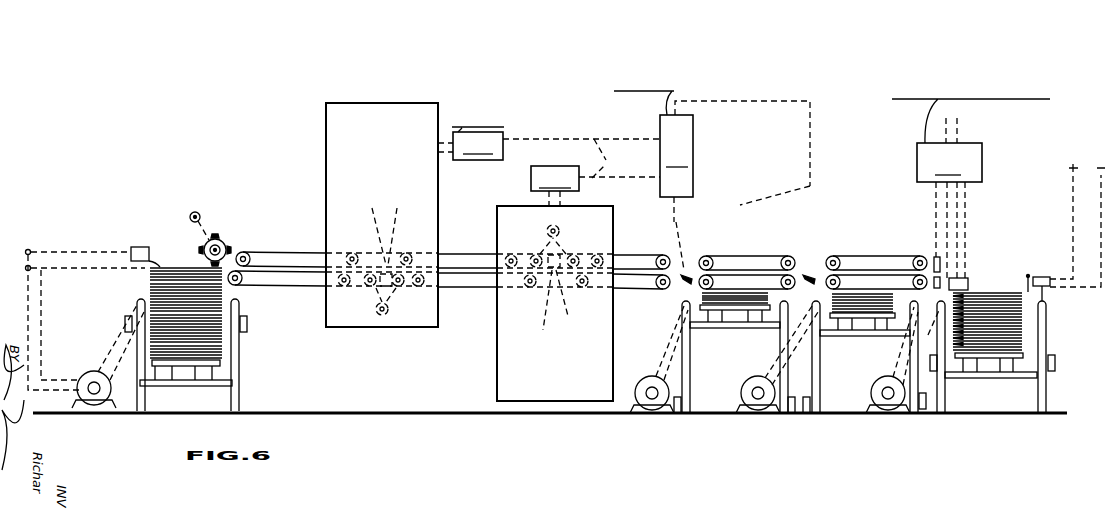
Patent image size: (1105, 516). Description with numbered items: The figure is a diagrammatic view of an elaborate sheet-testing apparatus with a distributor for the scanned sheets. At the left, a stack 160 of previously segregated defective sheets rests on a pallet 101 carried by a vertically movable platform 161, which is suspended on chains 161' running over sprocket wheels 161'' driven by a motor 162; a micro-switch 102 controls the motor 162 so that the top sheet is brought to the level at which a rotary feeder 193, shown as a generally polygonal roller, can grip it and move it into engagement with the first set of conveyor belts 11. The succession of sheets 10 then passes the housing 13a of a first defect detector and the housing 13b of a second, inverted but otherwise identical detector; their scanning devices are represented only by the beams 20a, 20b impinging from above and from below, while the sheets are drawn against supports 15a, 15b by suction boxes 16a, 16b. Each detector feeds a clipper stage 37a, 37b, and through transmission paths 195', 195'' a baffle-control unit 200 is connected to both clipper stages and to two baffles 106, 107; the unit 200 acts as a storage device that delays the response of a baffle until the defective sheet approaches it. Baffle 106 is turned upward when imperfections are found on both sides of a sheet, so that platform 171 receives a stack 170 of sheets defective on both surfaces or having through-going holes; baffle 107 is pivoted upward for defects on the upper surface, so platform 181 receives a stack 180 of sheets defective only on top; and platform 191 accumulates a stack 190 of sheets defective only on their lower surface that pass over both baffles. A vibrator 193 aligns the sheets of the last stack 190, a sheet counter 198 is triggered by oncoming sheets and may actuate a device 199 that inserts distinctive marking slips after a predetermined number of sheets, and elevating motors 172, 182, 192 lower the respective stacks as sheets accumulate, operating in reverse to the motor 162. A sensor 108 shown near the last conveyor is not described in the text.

The sheets 10 is at (293, 268).
The conveyor belts 11 is at (254, 253).
The housing of first defect detector 13a is at (326, 165).
The housing of second detector 13b is at (497, 373).
The support 15a is at (400, 294).
The suction box 16a is at (374, 292).
The beam 20a is at (393, 233).
The support 15b is at (540, 251).
The suction box 16b is at (566, 251).
The beam 20b is at (562, 305).
The clipper stage 37a is at (549, 136).
The clipper stage 37b is at (595, 186).
The pallet 101 is at (220, 364).
The micro-switch 102 is at (131, 249).
The baffle 106 is at (686, 274).
The baffle 107 is at (811, 276).
The sheet counter sensor 108 is at (934, 258).
The stack 160 is at (223, 343).
The vertically movable platform 161 is at (188, 355).
The chains 161' is at (141, 345).
The sprocket wheels 161'' is at (265, 318).
The motor 162 is at (92, 402).
The stack 170 is at (730, 297).
The platform 171 is at (757, 322).
The motor 172 is at (648, 402).
The stack 180 is at (870, 303).
The platform 181 is at (893, 337).
The motor 182 is at (757, 402).
The stack 190 is at (995, 340).
The platform 191 is at (1014, 378).
The motor 192 is at (890, 402).
The rotary feeder / vibrator 193 is at (218, 240).
The transmission path 195' is at (611, 158).
The transmission path 195'' is at (742, 228).
The sheet counter 198 is at (968, 172).
The slip-inserting device 199 is at (967, 281).
The baffle-control unit 200 is at (712, 129).